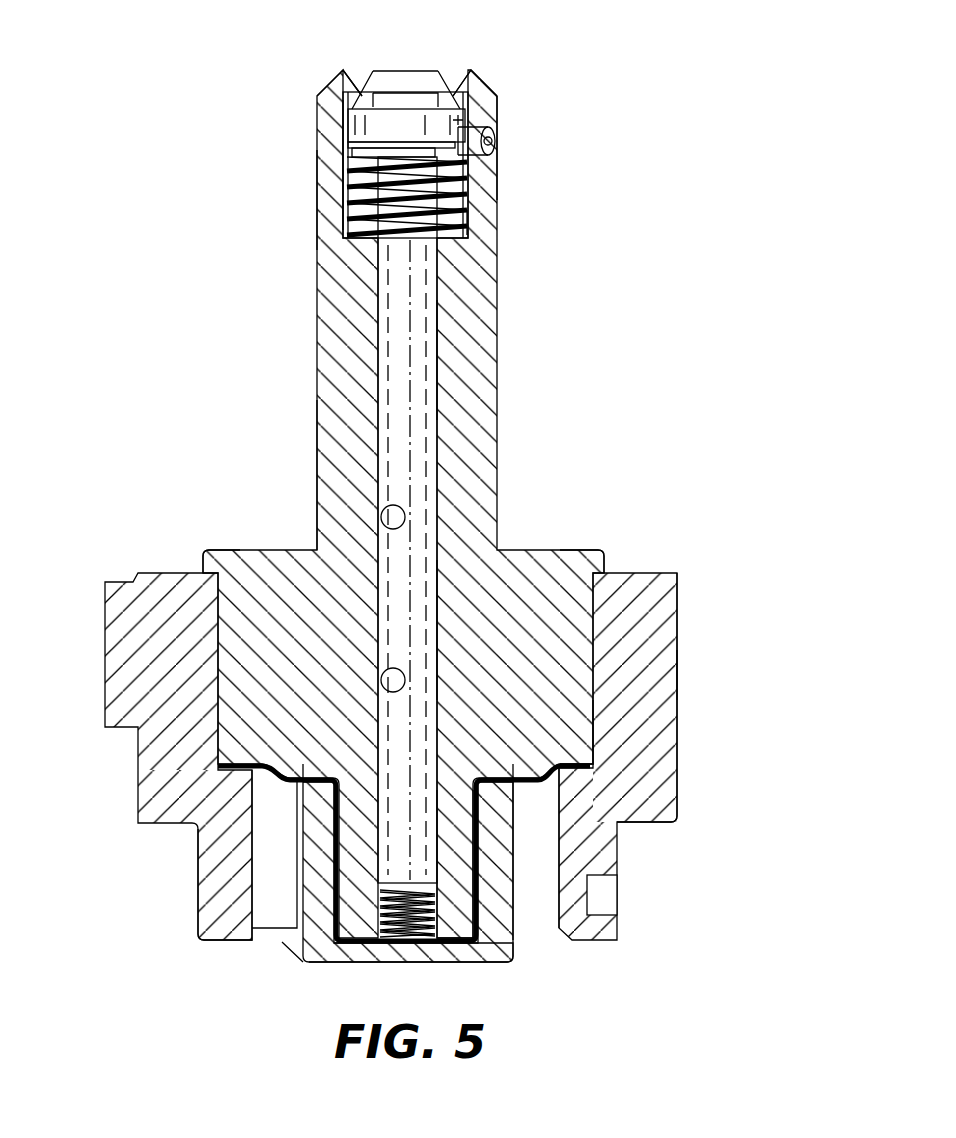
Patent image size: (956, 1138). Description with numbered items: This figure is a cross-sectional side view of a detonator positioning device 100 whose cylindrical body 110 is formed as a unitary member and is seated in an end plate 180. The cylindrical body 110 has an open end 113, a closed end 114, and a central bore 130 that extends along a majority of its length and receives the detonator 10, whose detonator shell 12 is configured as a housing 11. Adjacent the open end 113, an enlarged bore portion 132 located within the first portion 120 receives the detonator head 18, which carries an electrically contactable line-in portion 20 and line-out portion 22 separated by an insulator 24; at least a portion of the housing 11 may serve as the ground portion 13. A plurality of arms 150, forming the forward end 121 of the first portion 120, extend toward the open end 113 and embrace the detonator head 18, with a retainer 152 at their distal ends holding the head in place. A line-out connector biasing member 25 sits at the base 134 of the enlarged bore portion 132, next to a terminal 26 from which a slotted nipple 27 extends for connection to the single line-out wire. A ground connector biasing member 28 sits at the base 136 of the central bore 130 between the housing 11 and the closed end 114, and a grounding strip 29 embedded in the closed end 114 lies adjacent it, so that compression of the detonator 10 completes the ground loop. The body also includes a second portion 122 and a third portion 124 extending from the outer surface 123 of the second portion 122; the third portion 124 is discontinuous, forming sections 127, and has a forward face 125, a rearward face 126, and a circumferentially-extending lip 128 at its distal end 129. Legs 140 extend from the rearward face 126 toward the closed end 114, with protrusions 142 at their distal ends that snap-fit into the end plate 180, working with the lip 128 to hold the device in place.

The detonator positioning device 100 is at (416, 511).
The detonator 10 is at (375, 280).
The detonator housing 11 is at (437, 658).
The detonator shell 12 is at (440, 594).
The ground portion 13 is at (465, 878).
The detonator head 18 is at (338, 130).
The line-in portion 20 is at (345, 98).
The line-out portion 22 is at (360, 180).
The insulator 24 is at (458, 120).
The line-out connector biasing member 25 is at (468, 194).
The terminal 26 is at (355, 151).
The slotted nipple 27 is at (496, 140).
The ground connector biasing member 28 is at (440, 906).
The grounding strip 29 is at (541, 783).
The cylindrical body 110 is at (317, 490).
The open end 113 is at (363, 72).
The closed end 114 is at (444, 970).
The first portion 120 is at (317, 330).
The forward end 121 is at (245, 178).
The second portion 122 is at (317, 882).
The outer surface 123 is at (283, 823).
The third portion 124 is at (238, 650).
The forward face 125 is at (212, 550).
The rearward face 126 is at (573, 770).
The sections 127 is at (583, 655).
The circumferentially-extending lip 128 is at (600, 548).
The distal end 129 is at (676, 561).
The central bore 130 is at (432, 366).
The enlarged bore portion 132 is at (482, 224).
The base of the enlarged bore portion 134 is at (355, 220).
The base of the central bore 136 is at (377, 923).
The legs 140 is at (515, 852).
The protrusions 142 is at (522, 953).
The arms 150 is at (492, 107).
The retainer 152 is at (471, 83).
The end plate 180 is at (650, 735).